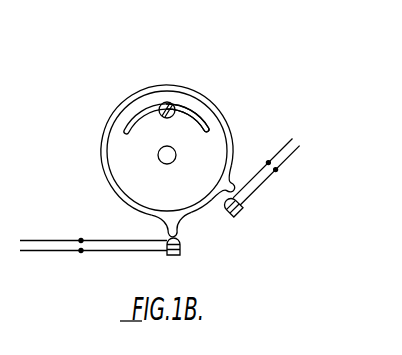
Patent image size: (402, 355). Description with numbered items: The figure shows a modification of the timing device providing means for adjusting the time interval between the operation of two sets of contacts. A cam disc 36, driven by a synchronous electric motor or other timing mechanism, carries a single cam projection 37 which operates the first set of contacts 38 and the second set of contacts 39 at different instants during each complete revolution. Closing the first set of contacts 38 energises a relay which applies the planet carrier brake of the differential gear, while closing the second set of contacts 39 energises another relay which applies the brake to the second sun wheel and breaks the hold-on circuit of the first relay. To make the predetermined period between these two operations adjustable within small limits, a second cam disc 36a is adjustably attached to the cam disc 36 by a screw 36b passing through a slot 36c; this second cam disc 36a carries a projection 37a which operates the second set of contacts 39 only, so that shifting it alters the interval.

The cam disc 36 is at (100, 160).
The second cam disc 36a is at (125, 138).
The screw 36b is at (171, 106).
The slot 36c is at (190, 117).
The cam projection 37 is at (178, 229).
The projection 37a is at (233, 185).
The first set of contacts 38 is at (180, 249).
The second set of contacts 39 is at (233, 217).